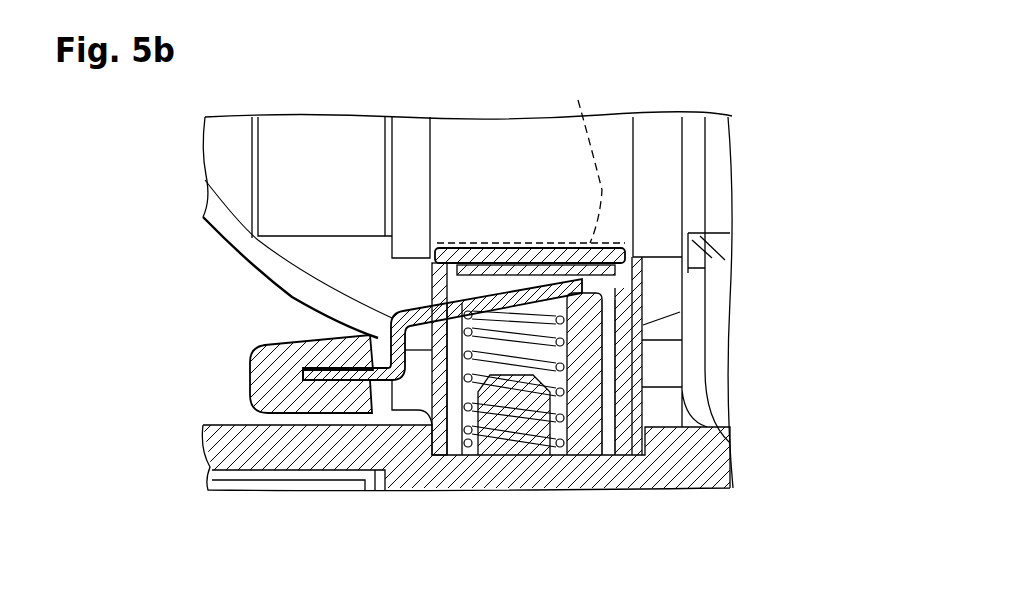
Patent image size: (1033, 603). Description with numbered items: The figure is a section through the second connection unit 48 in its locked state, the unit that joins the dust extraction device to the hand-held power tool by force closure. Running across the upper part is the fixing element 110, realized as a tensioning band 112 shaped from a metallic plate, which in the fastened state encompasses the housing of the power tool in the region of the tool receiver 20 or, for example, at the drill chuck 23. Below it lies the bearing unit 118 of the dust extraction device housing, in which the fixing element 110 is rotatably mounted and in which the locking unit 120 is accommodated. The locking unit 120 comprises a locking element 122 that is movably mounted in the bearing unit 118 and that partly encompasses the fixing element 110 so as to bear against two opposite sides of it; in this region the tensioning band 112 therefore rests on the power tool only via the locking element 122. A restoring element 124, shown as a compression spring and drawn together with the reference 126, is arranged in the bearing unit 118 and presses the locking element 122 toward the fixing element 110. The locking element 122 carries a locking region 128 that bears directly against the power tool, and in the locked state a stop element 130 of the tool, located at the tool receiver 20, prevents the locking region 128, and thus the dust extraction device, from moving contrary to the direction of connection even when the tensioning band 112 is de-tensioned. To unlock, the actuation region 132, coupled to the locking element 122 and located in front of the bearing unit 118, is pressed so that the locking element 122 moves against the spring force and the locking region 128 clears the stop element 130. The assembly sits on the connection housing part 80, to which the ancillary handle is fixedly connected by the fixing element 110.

The tool receiver 20 is at (360, 110).
The drill chuck 23 is at (413, 120).
The stop element 130 is at (457, 248).
The locking element 122 is at (525, 262).
The locking region 128 is at (578, 100).
The fixing element 110 is at (637, 250).
The tensioning band 112 is at (709, 253).
The second connection unit 48 is at (658, 287).
The bearing unit 118 is at (648, 336).
The locking unit 120 is at (374, 300).
The actuation region 132 is at (262, 343).
The restoring element 124 is at (447, 445).
The compression spring 126 is at (524, 374).
The connection housing part 80 is at (610, 478).